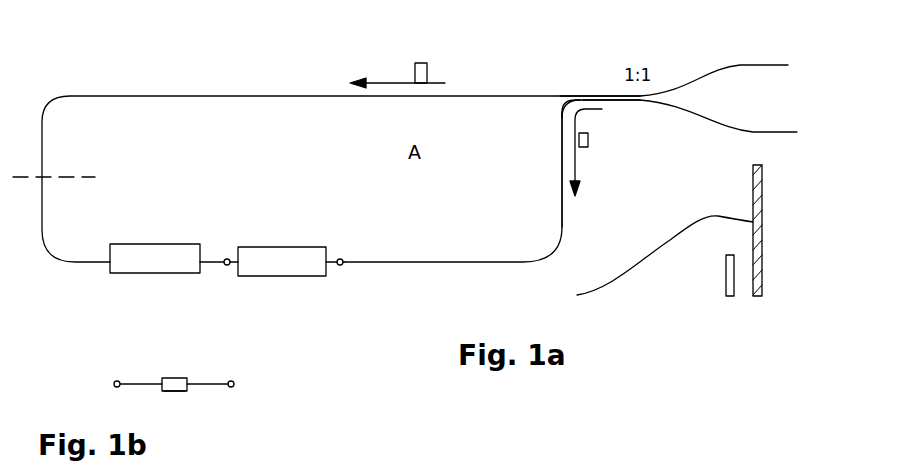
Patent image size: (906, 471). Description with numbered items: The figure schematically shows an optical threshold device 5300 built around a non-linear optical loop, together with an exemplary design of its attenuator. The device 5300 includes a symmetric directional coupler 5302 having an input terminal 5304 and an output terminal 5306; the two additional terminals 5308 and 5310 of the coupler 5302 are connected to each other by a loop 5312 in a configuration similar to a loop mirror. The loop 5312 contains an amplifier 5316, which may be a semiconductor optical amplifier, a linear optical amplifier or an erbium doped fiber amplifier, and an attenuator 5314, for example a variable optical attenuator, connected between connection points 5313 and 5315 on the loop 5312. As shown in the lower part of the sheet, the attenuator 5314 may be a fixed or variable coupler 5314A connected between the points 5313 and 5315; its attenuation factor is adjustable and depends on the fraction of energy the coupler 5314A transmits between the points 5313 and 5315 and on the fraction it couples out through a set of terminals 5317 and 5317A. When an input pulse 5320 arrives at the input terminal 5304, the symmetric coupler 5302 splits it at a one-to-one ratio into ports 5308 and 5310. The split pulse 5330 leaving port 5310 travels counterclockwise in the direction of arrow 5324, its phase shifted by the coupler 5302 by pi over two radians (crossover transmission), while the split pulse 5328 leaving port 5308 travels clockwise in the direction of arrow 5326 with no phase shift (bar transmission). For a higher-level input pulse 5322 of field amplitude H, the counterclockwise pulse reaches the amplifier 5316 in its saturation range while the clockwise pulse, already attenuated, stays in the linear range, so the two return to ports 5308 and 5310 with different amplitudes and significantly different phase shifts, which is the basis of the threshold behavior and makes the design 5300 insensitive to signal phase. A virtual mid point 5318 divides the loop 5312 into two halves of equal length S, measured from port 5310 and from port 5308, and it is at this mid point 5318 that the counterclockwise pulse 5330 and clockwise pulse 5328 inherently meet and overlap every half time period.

In FIG. 1A, the optical threshold device 5300 is at (104, 76).
In FIG. 1A, the symmetric directional coupler 5302 is at (638, 101).
In FIG. 1A, the input terminal 5304 is at (753, 132).
In FIG. 1A, the output terminal 5306 is at (752, 66).
In FIG. 1A, the terminal (port) 5308 is at (558, 107).
In FIG. 1A, the terminal (port) 5310 is at (593, 96).
In FIG. 1A, the loop 5312 is at (563, 213).
In FIG. 1A, the connection point 5313 is at (340, 258).
In FIG. 1B, the connection point 5313 is at (232, 380).
In FIG. 1A, the attenuator 5314 is at (312, 276).
In FIG. 1B, the attenuator 5314 is at (187, 373).
In FIG. 1B, the fixed or variable coupler 5314A is at (168, 391).
In FIG. 1A, the connection point 5315 is at (226, 258).
In FIG. 1B, the connection point 5315 is at (150, 366).
In FIG. 1A, the amplifier 5316 is at (172, 273).
In FIG. 1B, the terminal 5317 is at (138, 388).
In FIG. 1B, the terminal 5317A is at (207, 388).
In FIG. 1A, the virtual mid point 5318 is at (51, 180).
In FIG. 1A, the input pulse 5320 is at (726, 263).
In FIG. 1A, the higher-level input pulse 5322 is at (641, 261).
In FIG. 1A, the arrow (counterclockwise direction) 5324 is at (403, 83).
In FIG. 1A, the arrow (clockwise direction) 5326 is at (580, 160).
In FIG. 1A, the clockwise split pulse 5328 is at (588, 140).
In FIG. 1A, the counterclockwise split pulse 5330 is at (415, 63).